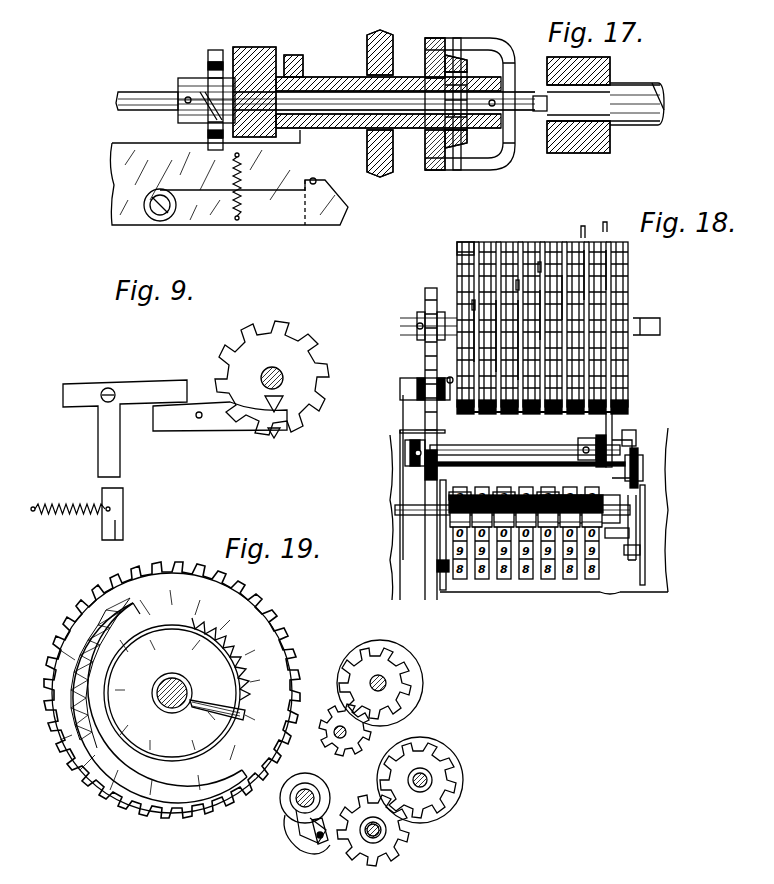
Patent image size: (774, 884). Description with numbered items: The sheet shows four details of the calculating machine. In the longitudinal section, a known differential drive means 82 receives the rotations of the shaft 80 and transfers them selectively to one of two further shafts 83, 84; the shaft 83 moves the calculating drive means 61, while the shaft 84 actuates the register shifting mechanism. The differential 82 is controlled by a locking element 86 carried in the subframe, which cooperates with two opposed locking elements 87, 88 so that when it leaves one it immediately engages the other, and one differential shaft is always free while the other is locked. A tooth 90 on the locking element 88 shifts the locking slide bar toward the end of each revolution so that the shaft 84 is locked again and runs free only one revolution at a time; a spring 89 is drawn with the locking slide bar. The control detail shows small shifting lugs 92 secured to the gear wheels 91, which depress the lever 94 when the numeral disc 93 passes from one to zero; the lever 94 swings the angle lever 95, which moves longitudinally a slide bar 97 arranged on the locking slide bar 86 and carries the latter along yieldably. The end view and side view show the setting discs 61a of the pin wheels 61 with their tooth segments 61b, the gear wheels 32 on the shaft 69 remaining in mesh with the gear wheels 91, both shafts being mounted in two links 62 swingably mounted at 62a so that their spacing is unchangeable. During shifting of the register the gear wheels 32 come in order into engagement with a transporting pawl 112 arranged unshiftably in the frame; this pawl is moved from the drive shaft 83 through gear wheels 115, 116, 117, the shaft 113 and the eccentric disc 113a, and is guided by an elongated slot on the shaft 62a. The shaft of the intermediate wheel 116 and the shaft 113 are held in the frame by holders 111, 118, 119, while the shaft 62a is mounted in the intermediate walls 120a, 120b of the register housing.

In FIG. 17, the shaft 80 is at (643, 118).
In FIG. 17, the differential drive means 82 is at (505, 157).
In FIG. 18, the shaft 83 is at (652, 320).
In FIG. 19, the shaft 83 is at (180, 690).
In FIG. 17, the shaft 84 is at (135, 100).
In FIG. 17, the locking element 86 is at (125, 180).
In FIG. 17, the locking element 87 is at (303, 133).
In FIG. 17, the locking element 88 is at (222, 72).
In FIG. 17, the spring 89 is at (247, 218).
In FIG. 17, the tooth 90 is at (210, 100).
In FIG. 18, the gear wheel 91 is at (460, 578).
In FIG. 19, the gear wheel 91 is at (437, 760).
In FIG. 9, the shifting lug 92 is at (272, 410).
In FIG. 18, the numeral disc 93 is at (482, 578).
In FIG. 19, the numeral disc 93 is at (455, 795).
In FIG. 9, the lever 94 is at (212, 418).
In FIG. 9, the angle lever 95 is at (145, 386).
In FIG. 9, the slide bar 97 is at (300, 355).
In FIG. 18, the gear wheel 32 is at (605, 510).
In FIG. 19, the gear wheel 32 is at (395, 853).
In FIG. 18, the pin wheel 61 is at (628, 278).
In FIG. 19, the pin wheel 61 is at (182, 710).
In FIG. 18, the setting disc 61a is at (458, 245).
In FIG. 19, the setting disc 61a is at (232, 612).
In FIG. 19, the tooth segment 61b is at (190, 818).
In FIG. 18, the link 62 is at (642, 525).
In FIG. 19, the link 62 is at (333, 805).
In FIG. 18, the shaft 62a is at (644, 465).
In FIG. 19, the shaft 62a is at (318, 833).
In FIG. 18, the shaft 69 is at (420, 512).
In FIG. 19, the shaft 69 is at (365, 835).
In FIG. 18, the holder 111 is at (636, 432).
In FIG. 18, the transporting pawl 112 is at (612, 430).
In FIG. 19, the transporting pawl 112 is at (300, 830).
In FIG. 18, the shaft 113 is at (500, 452).
In FIG. 19, the shaft 113 is at (296, 806).
In FIG. 19, the eccentric disc 113a is at (288, 795).
In FIG. 18, the gear wheel 115 is at (426, 296).
In FIG. 18, the intermediate wheel 116 is at (405, 395).
In FIG. 18, the gear wheel 117 is at (425, 470).
In FIG. 18, the holder 118 is at (425, 430).
In FIG. 18, the holder 119 is at (406, 450).
In FIG. 18, the intermediate wall 120a is at (440, 570).
In FIG. 18, the intermediate wall 120b is at (645, 552).